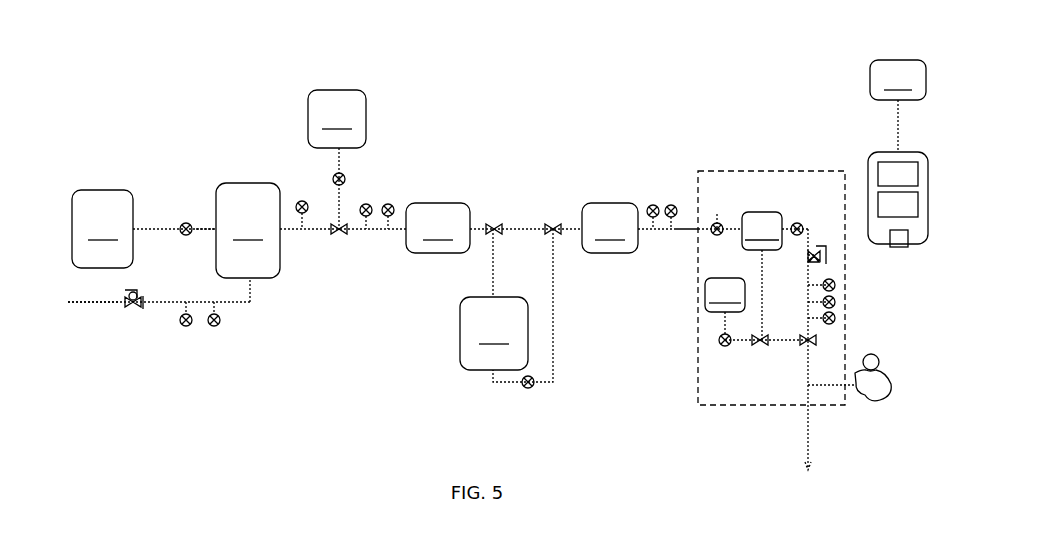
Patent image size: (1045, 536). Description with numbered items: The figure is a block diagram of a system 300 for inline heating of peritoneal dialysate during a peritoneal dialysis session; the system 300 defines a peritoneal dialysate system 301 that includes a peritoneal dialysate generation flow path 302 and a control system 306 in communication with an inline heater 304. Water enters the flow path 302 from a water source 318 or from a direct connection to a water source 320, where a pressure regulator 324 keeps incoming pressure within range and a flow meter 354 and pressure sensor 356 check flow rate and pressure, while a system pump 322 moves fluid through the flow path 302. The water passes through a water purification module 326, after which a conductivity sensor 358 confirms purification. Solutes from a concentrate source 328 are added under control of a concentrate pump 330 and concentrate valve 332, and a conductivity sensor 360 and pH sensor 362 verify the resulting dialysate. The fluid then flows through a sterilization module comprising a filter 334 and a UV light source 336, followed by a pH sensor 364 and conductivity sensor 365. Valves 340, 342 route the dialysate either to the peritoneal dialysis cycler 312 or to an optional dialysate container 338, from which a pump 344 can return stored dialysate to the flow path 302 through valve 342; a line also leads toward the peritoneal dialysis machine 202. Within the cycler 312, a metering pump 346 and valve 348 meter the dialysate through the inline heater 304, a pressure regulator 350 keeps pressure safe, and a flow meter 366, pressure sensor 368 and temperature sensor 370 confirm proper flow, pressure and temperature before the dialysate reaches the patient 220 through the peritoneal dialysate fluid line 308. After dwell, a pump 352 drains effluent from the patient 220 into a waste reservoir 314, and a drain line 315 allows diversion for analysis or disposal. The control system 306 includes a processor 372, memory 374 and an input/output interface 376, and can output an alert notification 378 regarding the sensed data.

The system 300 is at (712, 101).
The peritoneal dialysate system 301 is at (458, 88).
The peritoneal dialysate generation flow path 302 is at (200, 228).
The inline heater 304 is at (762, 231).
The control system 306 is at (894, 150).
The peritoneal dialysate fluid line 308 is at (808, 338).
The peritoneal dialysis cycler 312 is at (800, 168).
The waste reservoir 314 is at (725, 295).
The drain line 315 is at (806, 385).
The water source 318 is at (102, 229).
The water source 320 is at (76, 302).
The system pump 322 is at (184, 223).
The pressure regulator 324 is at (137, 308).
The water purification module 326 is at (248, 230).
The concentrate source 328 is at (337, 119).
The concentrate pump 330 is at (346, 175).
The concentrate valve 332 is at (338, 236).
The filter 334 is at (438, 228).
The UV light source 336 is at (610, 228).
The dialysate container 338 is at (494, 333).
The valve 340 is at (490, 224).
The valve 342 is at (550, 224).
The pump 344 is at (534, 385).
The metering pump 346 is at (716, 222).
The valve 348 is at (799, 222).
The pressure regulator 350 is at (810, 258).
The pump 352 is at (733, 346).
The flow meter 354 is at (185, 327).
The pressure sensor 356 is at (216, 327).
The conductivity sensor 358 is at (303, 200).
The conductivity sensor 360 is at (371, 204).
The pH sensor 362 is at (389, 216).
The pH sensor 364 is at (650, 204).
The conductivity sensor 365 is at (670, 204).
The flow meter 366 is at (836, 284).
The pressure sensor 368 is at (836, 302).
The temperature sensor 370 is at (836, 319).
The processor 372 is at (898, 174).
The memory 374 is at (898, 204).
The input/output interface 376 is at (903, 248).
The alert notification 378 is at (898, 80).
The peritoneal dialysis machine 202 is at (683, 231).
The patient 220 is at (866, 402).